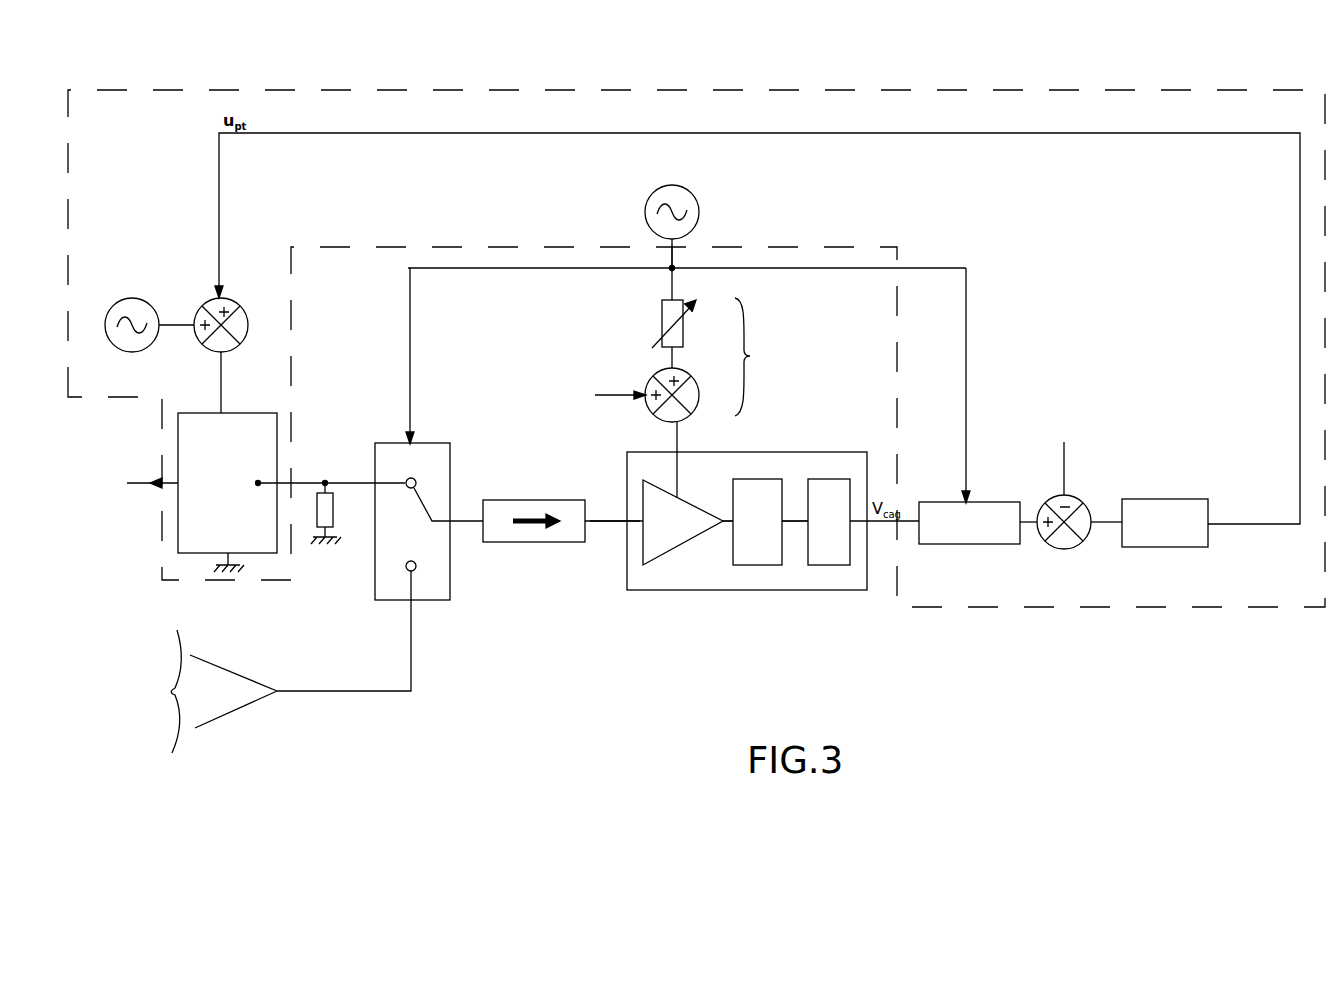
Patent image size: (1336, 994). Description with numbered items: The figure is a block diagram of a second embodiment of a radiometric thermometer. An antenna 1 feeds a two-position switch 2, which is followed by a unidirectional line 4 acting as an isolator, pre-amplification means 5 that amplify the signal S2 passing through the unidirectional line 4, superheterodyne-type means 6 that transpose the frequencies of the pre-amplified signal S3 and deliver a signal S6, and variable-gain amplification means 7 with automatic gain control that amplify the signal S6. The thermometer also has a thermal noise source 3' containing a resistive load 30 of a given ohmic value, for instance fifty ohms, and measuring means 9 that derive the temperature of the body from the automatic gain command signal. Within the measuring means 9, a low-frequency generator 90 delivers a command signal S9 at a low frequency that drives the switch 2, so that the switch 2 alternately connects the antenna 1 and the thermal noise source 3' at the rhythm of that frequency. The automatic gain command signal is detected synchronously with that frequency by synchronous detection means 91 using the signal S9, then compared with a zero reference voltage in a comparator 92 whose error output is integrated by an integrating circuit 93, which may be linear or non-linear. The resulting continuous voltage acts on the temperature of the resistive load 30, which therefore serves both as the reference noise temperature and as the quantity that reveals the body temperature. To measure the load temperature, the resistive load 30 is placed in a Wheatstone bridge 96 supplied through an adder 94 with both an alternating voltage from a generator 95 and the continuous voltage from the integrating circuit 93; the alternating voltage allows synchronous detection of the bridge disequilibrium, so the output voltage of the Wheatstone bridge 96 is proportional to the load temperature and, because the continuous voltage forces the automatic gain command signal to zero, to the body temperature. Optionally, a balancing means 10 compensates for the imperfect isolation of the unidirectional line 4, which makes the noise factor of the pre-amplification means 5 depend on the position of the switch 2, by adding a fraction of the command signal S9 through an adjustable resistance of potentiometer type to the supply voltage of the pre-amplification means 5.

The measuring means 9 is at (986, 112).
The low-frequency generator 90 is at (683, 201).
The command signal S9 is at (675, 252).
The adder 94 is at (231, 300).
The generator 95 is at (138, 302).
The Wheatstone bridge 96 is at (243, 525).
The resistive load 30 is at (334, 521).
The thermal noise source 3' is at (326, 593).
The switch 2 is at (449, 622).
The antenna 1 is at (236, 733).
The unidirectional line 4 is at (574, 543).
The signal S2 is at (613, 523).
The pre-amplification means 5 is at (665, 541).
The pre-amplified signal S3 is at (727, 524).
The superheterodyne-type means 6 is at (770, 522).
The signal S6 is at (797, 524).
The variable-gain amplification means 7 is at (863, 522).
The balancing means 10 is at (692, 360).
The synchronous detection means 91 is at (978, 523).
The comparator 92 is at (1064, 544).
The integrating circuit 93 is at (1152, 533).